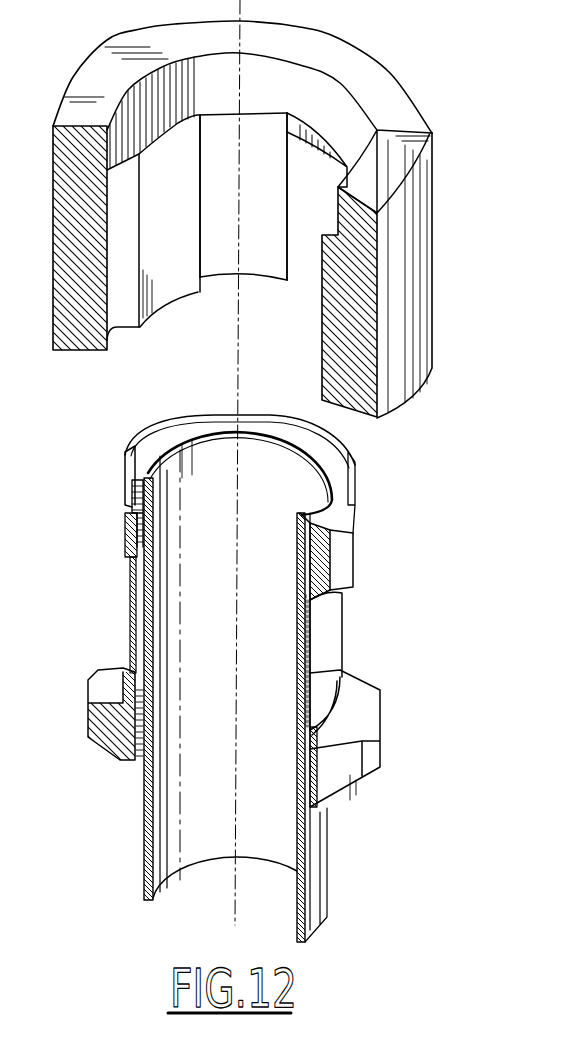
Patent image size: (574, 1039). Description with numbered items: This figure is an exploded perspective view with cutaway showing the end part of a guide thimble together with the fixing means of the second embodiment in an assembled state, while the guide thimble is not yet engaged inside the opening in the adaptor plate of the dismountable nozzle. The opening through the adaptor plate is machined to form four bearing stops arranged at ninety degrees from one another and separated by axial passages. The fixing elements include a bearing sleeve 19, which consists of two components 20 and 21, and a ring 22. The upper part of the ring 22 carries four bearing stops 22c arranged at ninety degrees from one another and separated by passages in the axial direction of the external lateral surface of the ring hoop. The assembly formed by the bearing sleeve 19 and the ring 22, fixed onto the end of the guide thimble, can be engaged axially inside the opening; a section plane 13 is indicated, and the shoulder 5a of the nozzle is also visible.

The shoulder 5a is at (406, 118).
The component of bearing sleeve 21 is at (308, 420).
The bearing stops 22c is at (157, 430).
The component of bearing sleeve 20 is at (106, 757).
The bearing sleeve 19 is at (364, 548).
The ring 22 is at (352, 656).
The section line 13- 13 is at (84, 626).